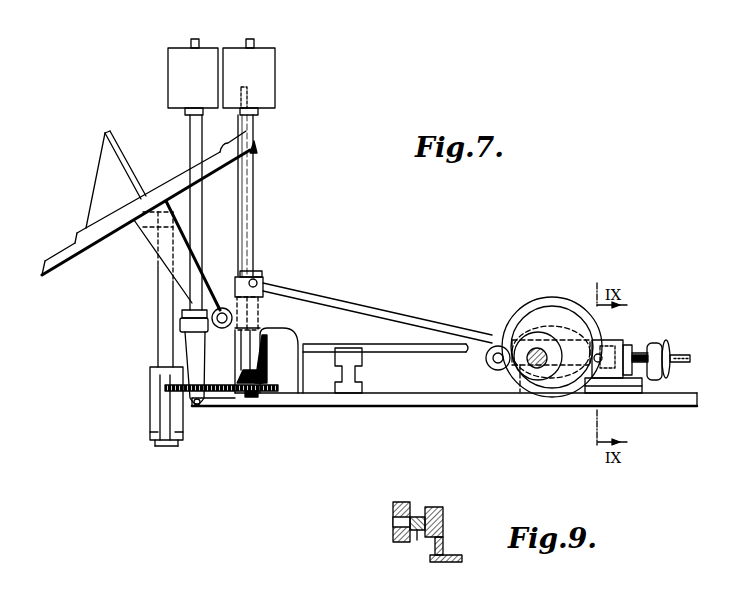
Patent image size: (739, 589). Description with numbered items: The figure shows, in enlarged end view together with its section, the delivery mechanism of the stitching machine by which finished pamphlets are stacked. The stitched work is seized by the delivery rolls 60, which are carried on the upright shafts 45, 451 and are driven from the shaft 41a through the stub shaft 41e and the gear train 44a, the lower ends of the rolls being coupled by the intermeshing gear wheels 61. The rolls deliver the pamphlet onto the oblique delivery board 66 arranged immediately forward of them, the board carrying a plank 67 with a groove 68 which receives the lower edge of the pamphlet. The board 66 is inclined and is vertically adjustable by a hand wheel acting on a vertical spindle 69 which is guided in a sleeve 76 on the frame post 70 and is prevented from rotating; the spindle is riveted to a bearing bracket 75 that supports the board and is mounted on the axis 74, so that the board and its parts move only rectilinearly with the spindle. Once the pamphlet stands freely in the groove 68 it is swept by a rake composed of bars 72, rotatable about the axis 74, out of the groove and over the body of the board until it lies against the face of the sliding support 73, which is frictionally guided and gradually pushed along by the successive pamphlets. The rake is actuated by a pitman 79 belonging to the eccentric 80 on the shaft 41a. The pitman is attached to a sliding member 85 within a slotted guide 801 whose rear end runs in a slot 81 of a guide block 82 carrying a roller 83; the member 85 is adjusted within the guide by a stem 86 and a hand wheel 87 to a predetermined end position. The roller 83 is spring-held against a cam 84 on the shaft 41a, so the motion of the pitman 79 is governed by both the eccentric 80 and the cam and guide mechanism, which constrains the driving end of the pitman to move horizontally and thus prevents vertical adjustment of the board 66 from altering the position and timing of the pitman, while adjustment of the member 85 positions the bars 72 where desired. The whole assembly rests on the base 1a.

In FIG. 7, the delivery rolls 60 is at (205, 68).
In FIG. 7, the plank 67 is at (210, 158).
In FIG. 7, the groove 68 is at (246, 136).
In FIG. 7, the sliding support 73 is at (110, 177).
In FIG. 7, the bars 72 is at (248, 183).
In FIG. 7, the oblique delivery board 66 is at (61, 264).
In FIG. 7, the upright shaft 451 is at (196, 222).
In FIG. 7, the upright shaft 45 is at (255, 243).
In FIG. 7, the bearing bracket 75 is at (162, 253).
In FIG. 7, the vertical spindle 69 is at (158, 312).
In FIG. 7, the axis 74 is at (210, 318).
In FIG. 7, the gear train 44a is at (243, 371).
In FIG. 7, the sleeve 76 is at (158, 416).
In FIG. 7, the frame post 70 is at (163, 446).
In FIG. 7, the intermeshing gear wheels 61 is at (250, 393).
In FIG. 7, the base plate 1a is at (525, 403).
In FIG. 7, the stub shaft 41e is at (383, 357).
In FIG. 7, the pitman 79 is at (355, 305).
In FIG. 9, the pitman 79 is at (419, 531).
In FIG. 7, the roller 83 is at (493, 368).
In FIG. 7, the eccentric 80 is at (538, 305).
In FIG. 7, the shaft 41a is at (532, 352).
In FIG. 7, the cam 84 is at (550, 323).
In FIG. 7, the slotted guide 801 is at (598, 340).
In FIG. 9, the slotted guide 801 is at (400, 502).
In FIG. 7, the slot 81 is at (620, 357).
In FIG. 9, the slot 81 is at (443, 521).
In FIG. 7, the stem 86 is at (650, 372).
In FIG. 7, the sliding member 85 is at (645, 349).
In FIG. 9, the sliding member 85 is at (396, 525).
In FIG. 7, the hand wheel 87 is at (668, 364).
In FIG. 7, the guide block 82 is at (622, 393).
In FIG. 9, the guide block 82 is at (456, 557).